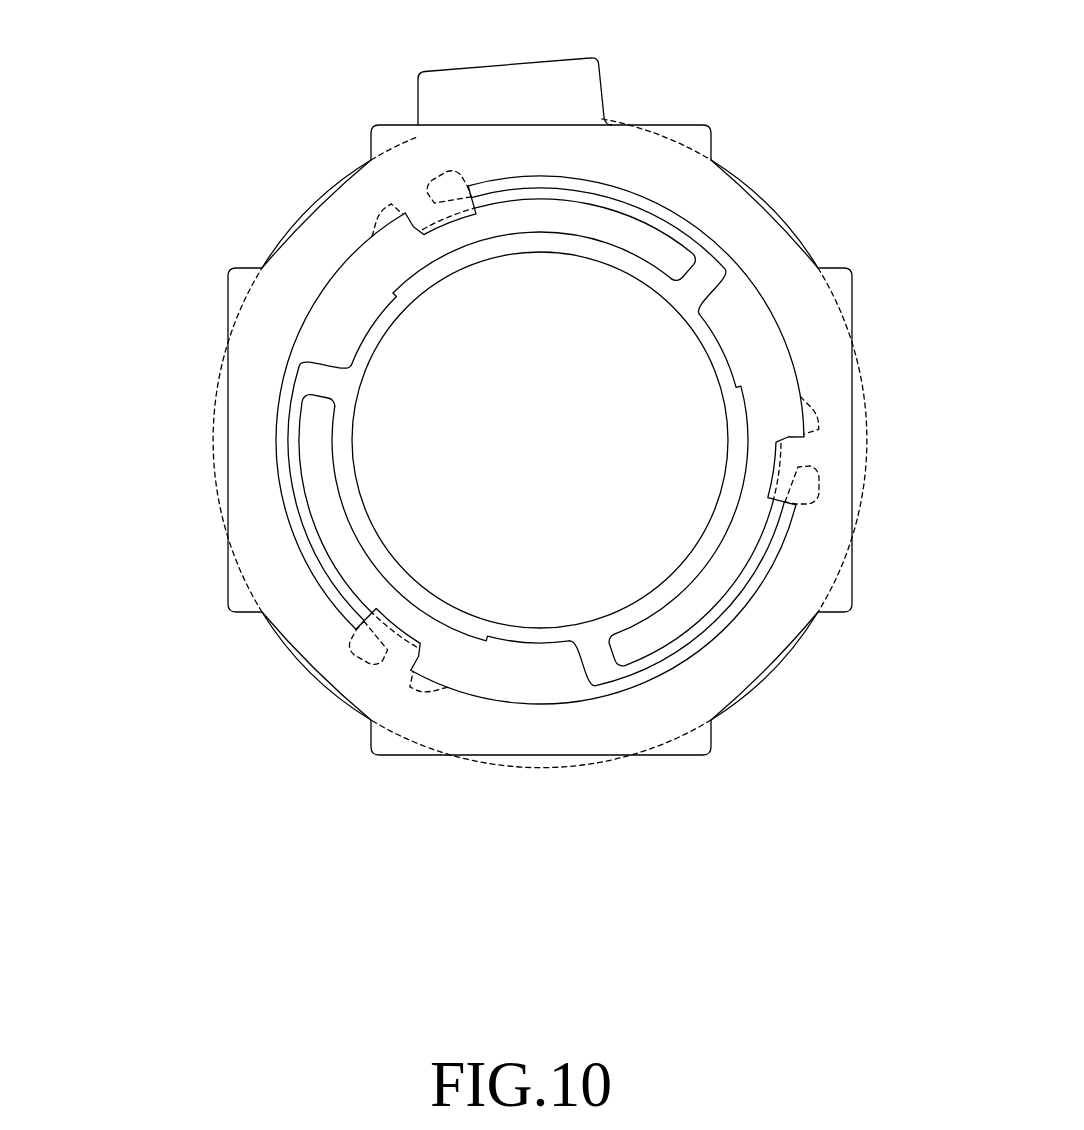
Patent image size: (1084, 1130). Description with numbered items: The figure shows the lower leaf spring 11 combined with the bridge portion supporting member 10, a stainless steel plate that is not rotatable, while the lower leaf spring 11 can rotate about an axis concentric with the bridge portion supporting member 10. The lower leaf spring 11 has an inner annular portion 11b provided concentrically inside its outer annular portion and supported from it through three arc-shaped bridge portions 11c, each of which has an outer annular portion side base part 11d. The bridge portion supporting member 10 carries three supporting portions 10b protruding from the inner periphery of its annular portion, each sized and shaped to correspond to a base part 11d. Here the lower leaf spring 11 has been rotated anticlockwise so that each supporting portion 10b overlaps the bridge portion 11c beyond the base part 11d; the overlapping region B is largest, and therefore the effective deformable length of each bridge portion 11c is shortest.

The bridge portion supporting member 10 is at (227, 300).
The supporting portion 10b is at (402, 627).
The lower leaf spring 11 is at (293, 223).
The inner annular portion 11b is at (453, 264).
The bridge portion 11c is at (593, 200).
The outer annular portion side base part 11d is at (400, 668).
The overlapping region B is at (383, 627).